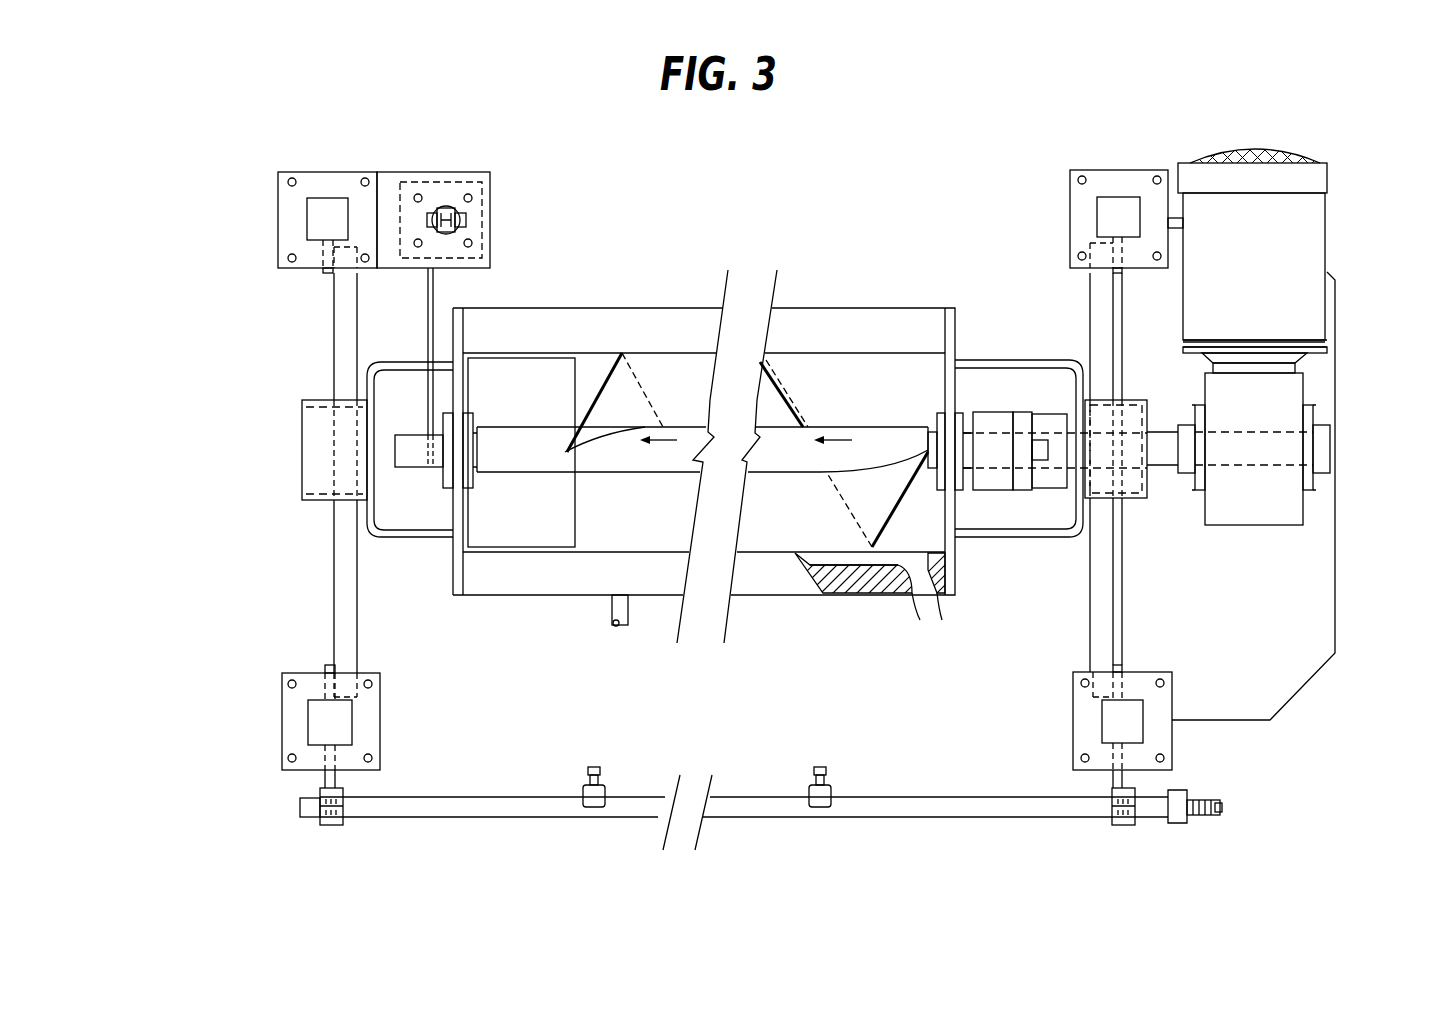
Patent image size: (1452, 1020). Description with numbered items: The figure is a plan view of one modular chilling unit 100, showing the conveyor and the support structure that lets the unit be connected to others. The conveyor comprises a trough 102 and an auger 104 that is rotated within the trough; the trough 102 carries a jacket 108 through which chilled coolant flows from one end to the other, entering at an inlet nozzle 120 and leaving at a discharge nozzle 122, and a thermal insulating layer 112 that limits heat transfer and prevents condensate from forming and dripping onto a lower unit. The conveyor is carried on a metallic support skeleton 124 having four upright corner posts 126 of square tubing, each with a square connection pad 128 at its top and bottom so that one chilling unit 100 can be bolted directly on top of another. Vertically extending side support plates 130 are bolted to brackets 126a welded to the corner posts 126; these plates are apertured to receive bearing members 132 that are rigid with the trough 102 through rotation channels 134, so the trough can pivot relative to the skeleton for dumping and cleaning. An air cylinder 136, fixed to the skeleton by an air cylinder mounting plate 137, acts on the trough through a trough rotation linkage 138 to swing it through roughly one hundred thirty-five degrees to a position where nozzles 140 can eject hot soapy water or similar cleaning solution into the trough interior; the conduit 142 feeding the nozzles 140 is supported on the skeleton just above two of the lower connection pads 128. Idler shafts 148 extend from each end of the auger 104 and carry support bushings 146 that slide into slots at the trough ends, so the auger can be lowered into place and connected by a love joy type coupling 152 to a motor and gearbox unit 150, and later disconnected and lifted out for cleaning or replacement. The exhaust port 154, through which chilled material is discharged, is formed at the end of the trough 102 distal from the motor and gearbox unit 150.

The chilling unit 100 is at (556, 163).
The trough 102 is at (622, 286).
The auger 104 is at (628, 407).
The jacket 108 is at (823, 560).
The thermal insulating layer 112 is at (845, 580).
The inlet nozzle 120 is at (943, 607).
The discharge nozzle 122 is at (617, 632).
The support skeleton 124 is at (260, 540).
The corner post 126 is at (318, 205).
The bracket 126a is at (325, 272).
The connection pad 128 is at (288, 222).
The side support plate 130 is at (344, 360).
The bearing member 132 is at (310, 447).
The rotation channel 134 is at (385, 545).
The air cylinder 136 is at (447, 190).
The air cylinder mounting plate 137 is at (397, 185).
The trough rotation linkage 138 is at (428, 316).
The nozzle 140 is at (596, 815).
The conduit 142 is at (498, 810).
The support bushing 146 is at (927, 425).
The idler shaft 148 is at (987, 417).
The motor and gearbox unit 150 is at (1342, 210).
The coupling 152 is at (1047, 482).
The exhaust port 154 is at (537, 385).